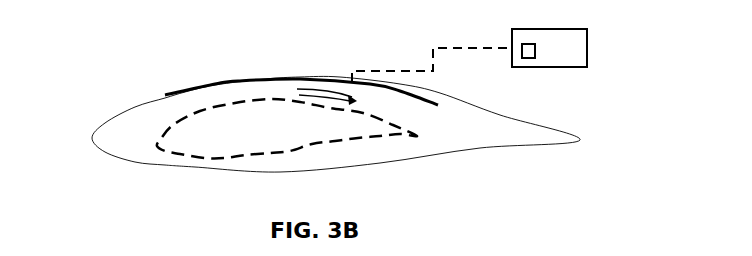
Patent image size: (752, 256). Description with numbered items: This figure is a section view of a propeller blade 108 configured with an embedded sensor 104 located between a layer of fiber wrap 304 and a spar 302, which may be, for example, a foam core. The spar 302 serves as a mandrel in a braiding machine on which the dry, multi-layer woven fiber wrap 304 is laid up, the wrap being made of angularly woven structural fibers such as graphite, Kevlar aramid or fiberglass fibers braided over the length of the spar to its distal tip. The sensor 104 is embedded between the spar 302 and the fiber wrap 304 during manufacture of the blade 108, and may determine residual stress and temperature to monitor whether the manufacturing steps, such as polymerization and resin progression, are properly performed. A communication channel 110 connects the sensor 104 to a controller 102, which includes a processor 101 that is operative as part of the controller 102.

The propeller blade 108 is at (97, 143).
The fiber wrap 304 is at (238, 82).
The sensor 104 is at (297, 90).
The spar 302 is at (204, 156).
The communication channel 110 is at (457, 48).
The processor 101 is at (528, 60).
The controller 102 is at (578, 67).